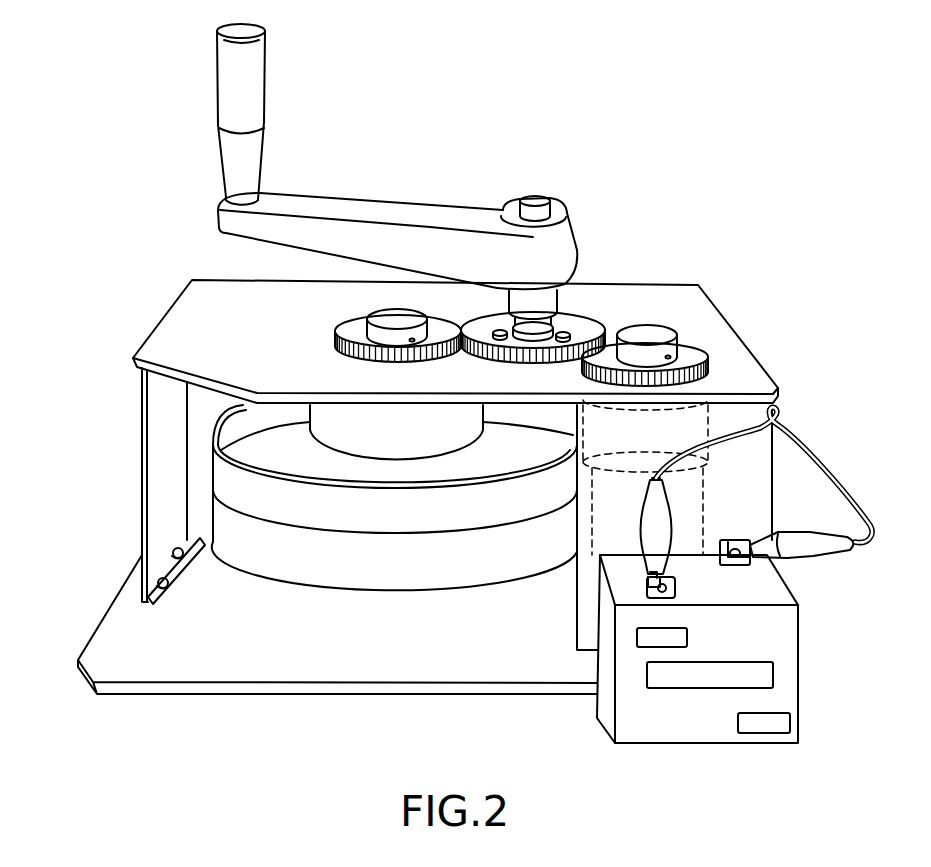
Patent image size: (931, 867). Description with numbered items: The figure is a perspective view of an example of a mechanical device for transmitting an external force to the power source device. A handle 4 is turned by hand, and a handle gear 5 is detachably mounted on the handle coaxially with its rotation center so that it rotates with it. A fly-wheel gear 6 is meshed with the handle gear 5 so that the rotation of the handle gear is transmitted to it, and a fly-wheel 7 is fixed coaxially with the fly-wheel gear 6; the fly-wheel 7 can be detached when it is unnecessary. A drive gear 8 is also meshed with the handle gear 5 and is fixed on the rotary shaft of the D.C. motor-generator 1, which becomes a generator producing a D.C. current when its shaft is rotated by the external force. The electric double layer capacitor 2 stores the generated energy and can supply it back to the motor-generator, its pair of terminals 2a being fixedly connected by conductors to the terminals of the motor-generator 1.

The D.C. motor-generator 1 is at (587, 517).
The electric double layer capacitor 2 is at (607, 697).
The terminals 2a is at (740, 540).
The handle 4 is at (330, 197).
The handle gear 5 is at (588, 316).
The fly-wheel gear 6 is at (333, 325).
The fly-wheel 7 is at (213, 457).
The drive gear 8 is at (704, 350).